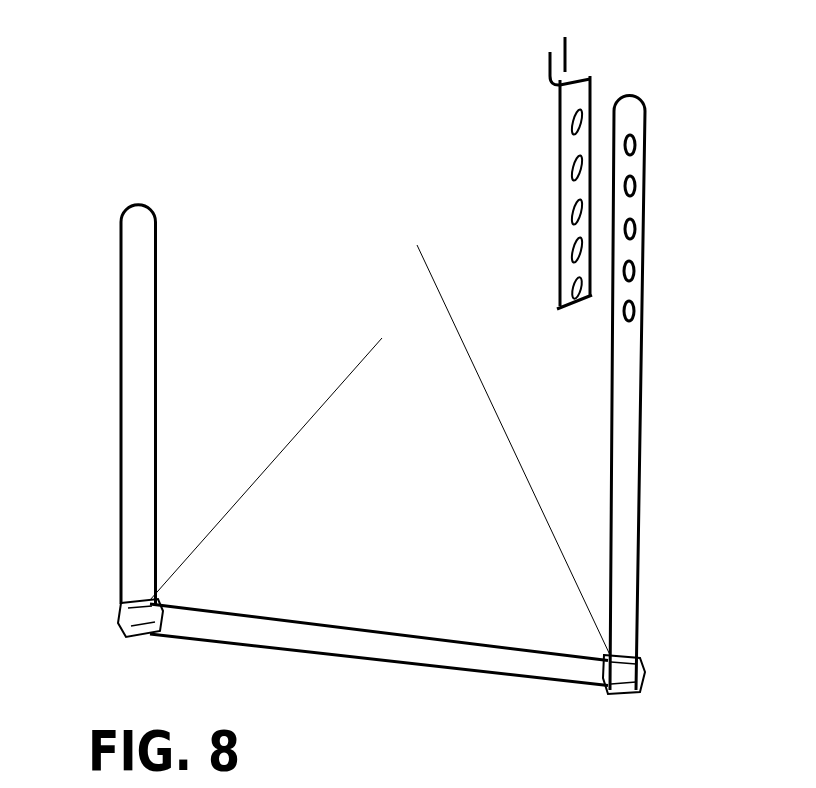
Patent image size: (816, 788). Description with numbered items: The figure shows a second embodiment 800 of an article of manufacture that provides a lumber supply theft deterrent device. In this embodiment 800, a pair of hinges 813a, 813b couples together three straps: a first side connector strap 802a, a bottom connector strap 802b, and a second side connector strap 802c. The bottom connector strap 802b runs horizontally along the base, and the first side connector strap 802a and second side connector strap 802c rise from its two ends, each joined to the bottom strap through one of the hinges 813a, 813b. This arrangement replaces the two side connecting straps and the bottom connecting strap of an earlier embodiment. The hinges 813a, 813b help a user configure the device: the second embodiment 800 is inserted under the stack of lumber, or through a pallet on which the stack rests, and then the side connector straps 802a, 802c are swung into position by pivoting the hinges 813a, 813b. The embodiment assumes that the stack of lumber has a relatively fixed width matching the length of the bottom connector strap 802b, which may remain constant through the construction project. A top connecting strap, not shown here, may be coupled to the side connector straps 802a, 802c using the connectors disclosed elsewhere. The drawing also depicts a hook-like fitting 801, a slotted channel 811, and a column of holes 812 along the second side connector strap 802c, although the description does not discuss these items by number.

The second embodiment 800 is at (166, 143).
The hook bracket 801 is at (589, 77).
The slotted channel 811 is at (575, 163).
The holes 812 is at (635, 230).
The first side connector strap 802a is at (148, 364).
The bottom connector strap 802b is at (300, 619).
The second side connector strap 802c is at (637, 458).
The hinge 813a is at (122, 634).
The hinge 813b is at (607, 690).